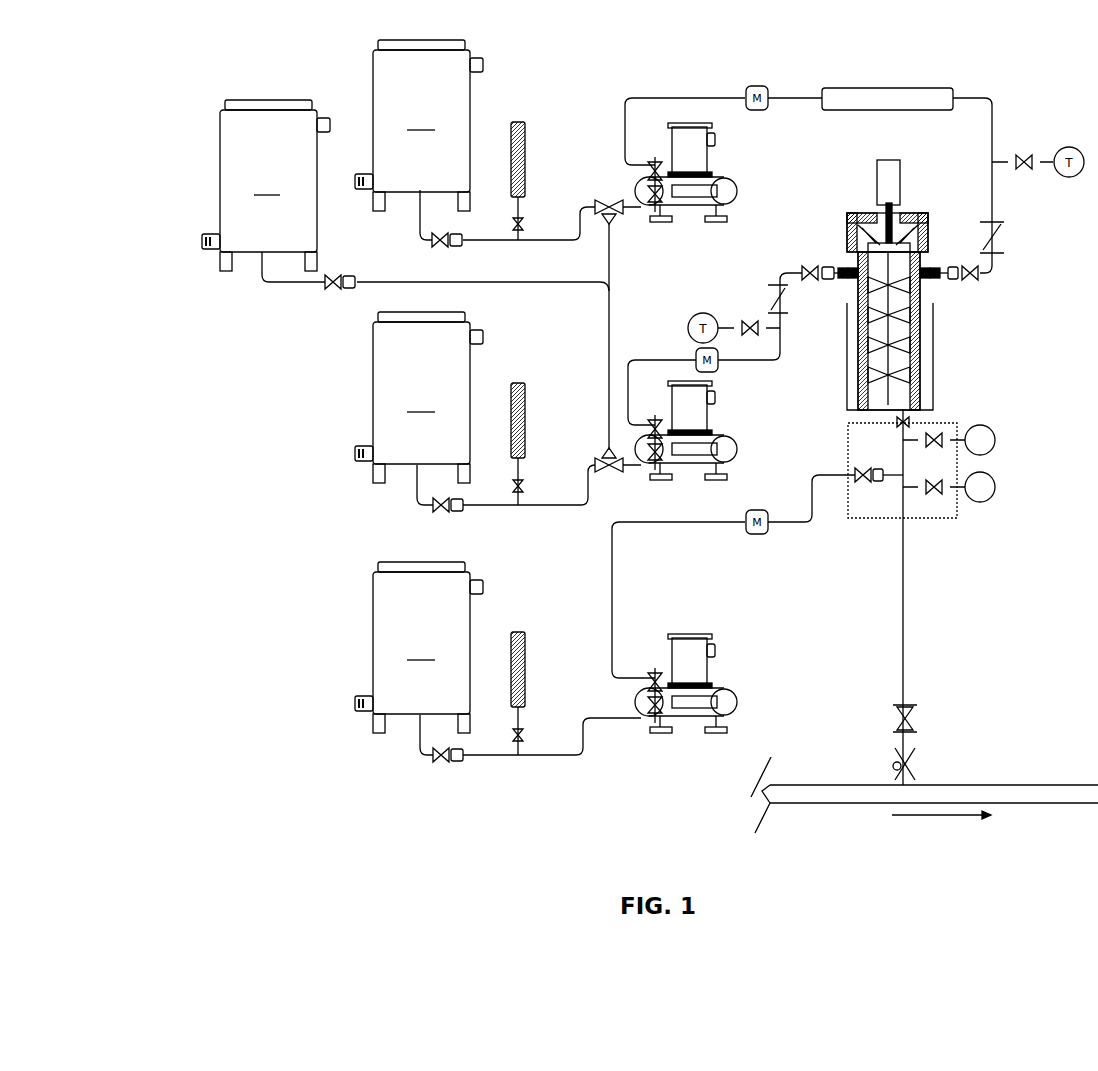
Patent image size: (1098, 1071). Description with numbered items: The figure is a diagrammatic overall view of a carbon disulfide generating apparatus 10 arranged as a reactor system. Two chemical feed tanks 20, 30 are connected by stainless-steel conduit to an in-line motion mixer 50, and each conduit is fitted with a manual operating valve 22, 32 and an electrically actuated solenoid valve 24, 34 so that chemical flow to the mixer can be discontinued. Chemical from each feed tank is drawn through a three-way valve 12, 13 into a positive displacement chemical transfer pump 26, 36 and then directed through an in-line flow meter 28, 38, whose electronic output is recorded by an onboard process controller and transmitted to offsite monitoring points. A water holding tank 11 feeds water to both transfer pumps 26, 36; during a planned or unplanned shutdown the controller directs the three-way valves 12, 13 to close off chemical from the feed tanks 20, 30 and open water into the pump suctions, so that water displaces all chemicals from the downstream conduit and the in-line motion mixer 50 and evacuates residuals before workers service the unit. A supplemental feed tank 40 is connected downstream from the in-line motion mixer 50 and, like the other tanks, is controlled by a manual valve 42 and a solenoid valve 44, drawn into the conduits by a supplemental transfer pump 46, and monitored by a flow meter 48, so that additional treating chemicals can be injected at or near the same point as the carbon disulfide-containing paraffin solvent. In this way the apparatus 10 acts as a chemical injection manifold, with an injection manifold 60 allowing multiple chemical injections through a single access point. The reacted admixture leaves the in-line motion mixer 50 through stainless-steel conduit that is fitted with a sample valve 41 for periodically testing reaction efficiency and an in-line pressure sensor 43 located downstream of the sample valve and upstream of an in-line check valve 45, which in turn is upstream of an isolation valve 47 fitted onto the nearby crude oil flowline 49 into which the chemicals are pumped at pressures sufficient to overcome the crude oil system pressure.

The carbon disulfide generating apparatus 10 is at (290, 380).
The water holding tank 11 is at (266, 185).
The chemical feed tank 20 is at (419, 125).
The manual operating valve 22 is at (434, 243).
The electrically actuated solenoid valve 24 is at (521, 120).
The three-way valve 12 is at (606, 203).
The positive displacement chemical transfer pump 26 is at (729, 187).
The in-line flow meter 28 is at (749, 85).
The chemical feed tank 30 is at (419, 397).
The manual operating valve 32 is at (436, 508).
The electrically actuated solenoid valve 34 is at (521, 382).
The three-way valve 13 is at (606, 461).
The positive displacement chemical transfer pump 36 is at (727, 443).
The in-line flow meter 38 is at (700, 351).
The supplemental feed tank 40 is at (419, 647).
The manual valve 42 is at (436, 757).
The solenoid valve 44 is at (521, 631).
The supplemental transfer pump 46 is at (721, 689).
The flow meter 48 is at (740, 528).
The in-line motion mixer 50 is at (931, 336).
The injection manifold 60 is at (875, 524).
The sample valve 41 is at (994, 432).
The in-line pressure sensor 43 is at (994, 485).
The in-line check valve 45 is at (911, 709).
The isolation valve 47 is at (897, 760).
The crude oil flowline 49 is at (938, 784).